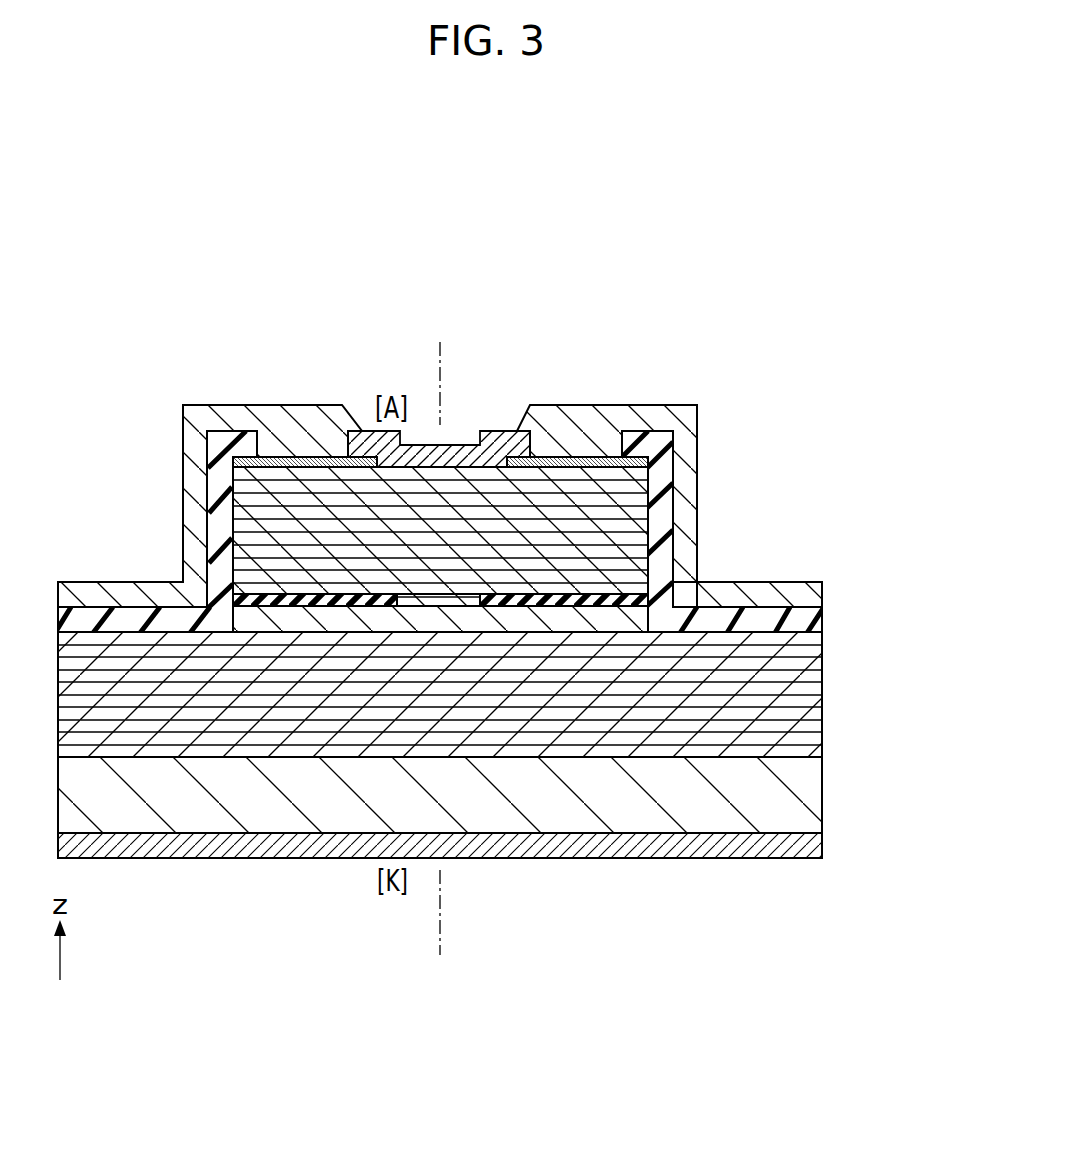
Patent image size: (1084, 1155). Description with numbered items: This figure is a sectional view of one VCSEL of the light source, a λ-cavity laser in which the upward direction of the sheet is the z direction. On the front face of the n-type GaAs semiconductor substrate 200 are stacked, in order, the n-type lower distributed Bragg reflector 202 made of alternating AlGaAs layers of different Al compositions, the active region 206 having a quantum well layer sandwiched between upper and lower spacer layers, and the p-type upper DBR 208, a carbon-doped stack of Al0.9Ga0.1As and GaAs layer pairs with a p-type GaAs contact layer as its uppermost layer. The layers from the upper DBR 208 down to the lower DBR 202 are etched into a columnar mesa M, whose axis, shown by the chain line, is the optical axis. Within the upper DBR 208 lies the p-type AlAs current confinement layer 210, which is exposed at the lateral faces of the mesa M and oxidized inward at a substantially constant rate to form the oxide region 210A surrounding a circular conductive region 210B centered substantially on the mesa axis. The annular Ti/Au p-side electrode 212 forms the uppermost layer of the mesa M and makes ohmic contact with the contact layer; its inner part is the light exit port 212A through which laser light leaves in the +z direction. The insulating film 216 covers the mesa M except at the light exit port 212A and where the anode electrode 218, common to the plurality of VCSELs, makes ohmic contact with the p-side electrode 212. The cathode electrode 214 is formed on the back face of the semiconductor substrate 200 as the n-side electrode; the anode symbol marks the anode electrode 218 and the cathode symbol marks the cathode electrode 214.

The semiconductor substrate 200 is at (822, 793).
The lower distributed Bragg reflector 202 is at (862, 632).
The active region 206 is at (636, 617).
The upper distributed Bragg reflector 208 is at (172, 468).
The current confinement layer 210 is at (588, 536).
The oxide region 210A is at (638, 603).
The conductive region 210B is at (462, 595).
The p-side electrode 212 is at (645, 460).
The light exit port 212A is at (471, 407).
The cathode electrode 214 is at (822, 845).
The insulating film 216 is at (653, 442).
The anode electrode 218 is at (682, 413).
The mesa M is at (224, 470).
The vertical cavity surface emitting laser VCSEL is at (215, 210).